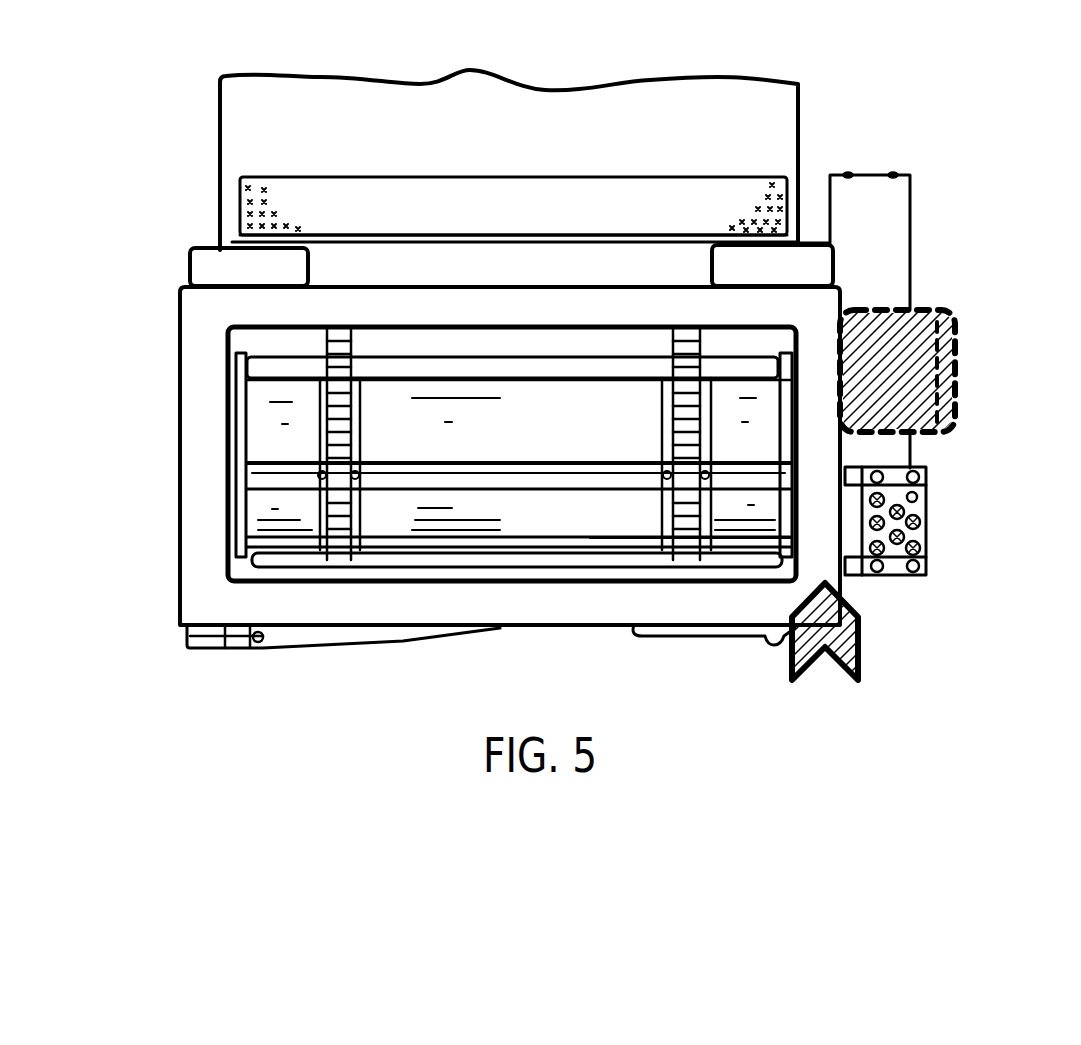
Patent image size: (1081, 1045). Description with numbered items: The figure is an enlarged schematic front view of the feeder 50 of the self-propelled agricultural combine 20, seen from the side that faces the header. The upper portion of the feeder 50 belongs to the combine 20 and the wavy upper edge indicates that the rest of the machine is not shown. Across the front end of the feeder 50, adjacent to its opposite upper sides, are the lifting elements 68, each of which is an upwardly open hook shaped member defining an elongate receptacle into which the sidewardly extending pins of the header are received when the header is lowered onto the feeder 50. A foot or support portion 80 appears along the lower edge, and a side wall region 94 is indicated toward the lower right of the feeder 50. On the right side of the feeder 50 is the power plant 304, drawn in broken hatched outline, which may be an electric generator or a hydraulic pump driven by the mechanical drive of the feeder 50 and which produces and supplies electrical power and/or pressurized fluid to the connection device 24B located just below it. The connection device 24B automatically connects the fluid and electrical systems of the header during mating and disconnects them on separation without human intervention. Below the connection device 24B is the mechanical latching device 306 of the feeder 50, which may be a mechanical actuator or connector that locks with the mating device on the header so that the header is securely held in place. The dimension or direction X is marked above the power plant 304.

The self-propelled agricultural combine 20 is at (803, 113).
The feeder 50 is at (468, 283).
The lifting elements 68 is at (190, 266).
The foot 80 is at (255, 648).
The side wall 94 is at (840, 549).
The direction X is at (870, 172).
The power plant 304 is at (957, 370).
The connection device 24B is at (928, 560).
The mechanical latching device 306 is at (837, 663).